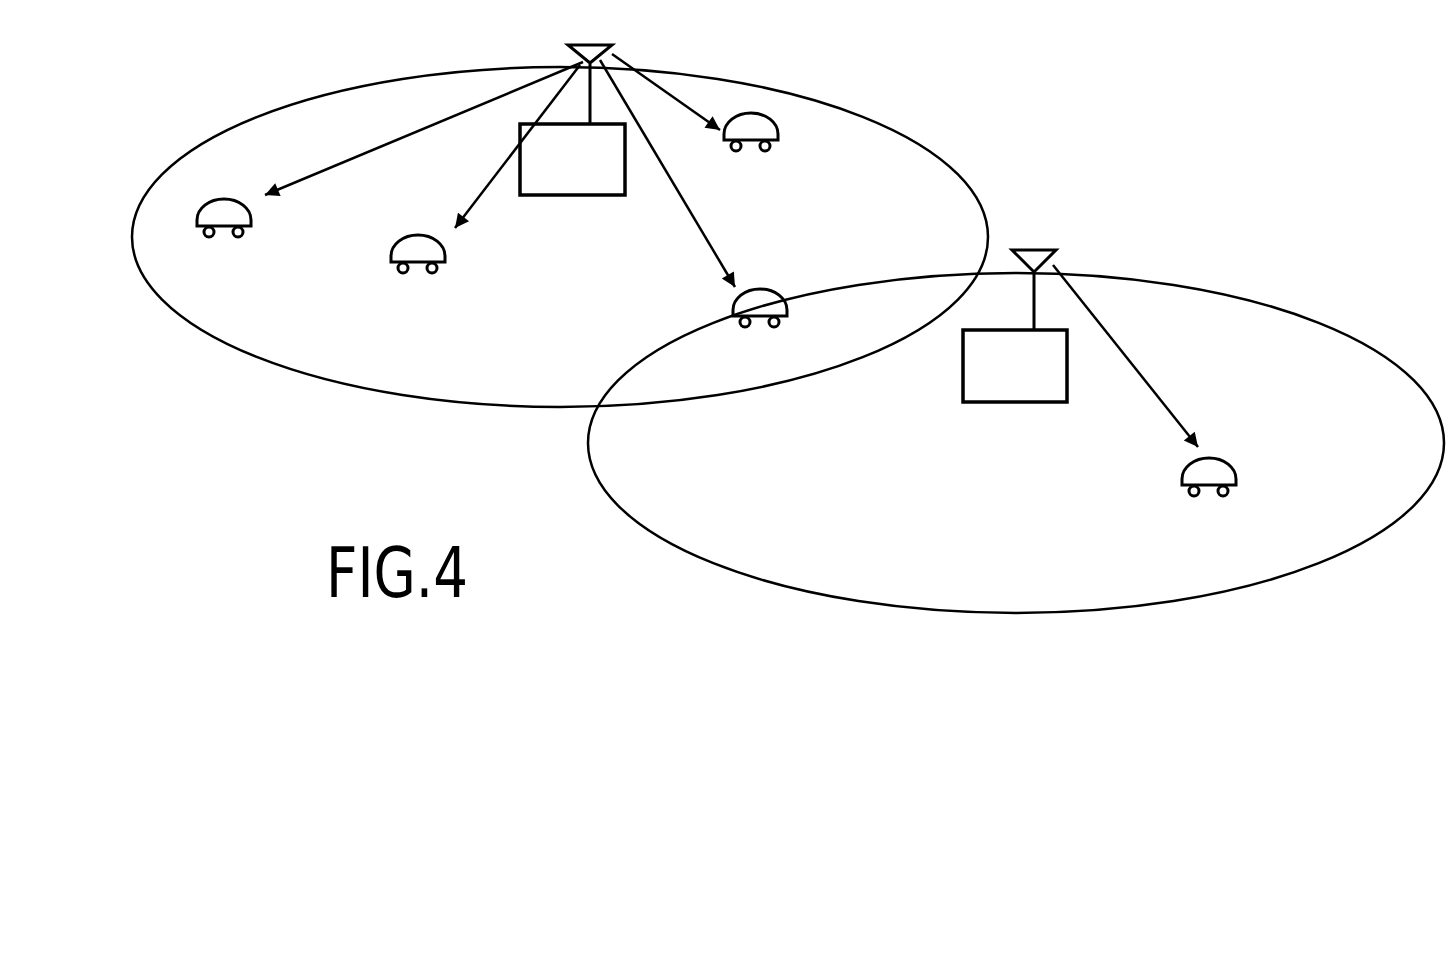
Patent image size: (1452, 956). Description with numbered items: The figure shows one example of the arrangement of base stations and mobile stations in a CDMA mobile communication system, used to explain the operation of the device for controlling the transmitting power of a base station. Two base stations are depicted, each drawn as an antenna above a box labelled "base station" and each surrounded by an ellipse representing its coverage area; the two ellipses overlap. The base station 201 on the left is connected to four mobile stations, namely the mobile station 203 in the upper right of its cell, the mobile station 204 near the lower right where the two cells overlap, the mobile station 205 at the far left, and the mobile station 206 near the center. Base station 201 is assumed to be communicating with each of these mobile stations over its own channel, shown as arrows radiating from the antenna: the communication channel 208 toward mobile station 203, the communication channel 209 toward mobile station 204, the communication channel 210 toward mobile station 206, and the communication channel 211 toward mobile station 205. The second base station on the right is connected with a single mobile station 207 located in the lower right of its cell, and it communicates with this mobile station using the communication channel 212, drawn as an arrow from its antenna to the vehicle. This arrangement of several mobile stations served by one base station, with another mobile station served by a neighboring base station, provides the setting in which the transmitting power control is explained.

The base station 201 is at (585, 196).
The mobile station 203 is at (778, 133).
The mobile station 204 is at (733, 305).
The mobile station 205 is at (223, 200).
The mobile station 206 is at (447, 258).
The mobile station 207 is at (1230, 468).
The communication channel 208 is at (683, 103).
The communication channel 209 is at (712, 243).
The communication channel 210 is at (502, 146).
The communication channel 211 is at (420, 130).
The communication channel 212 is at (1035, 403).